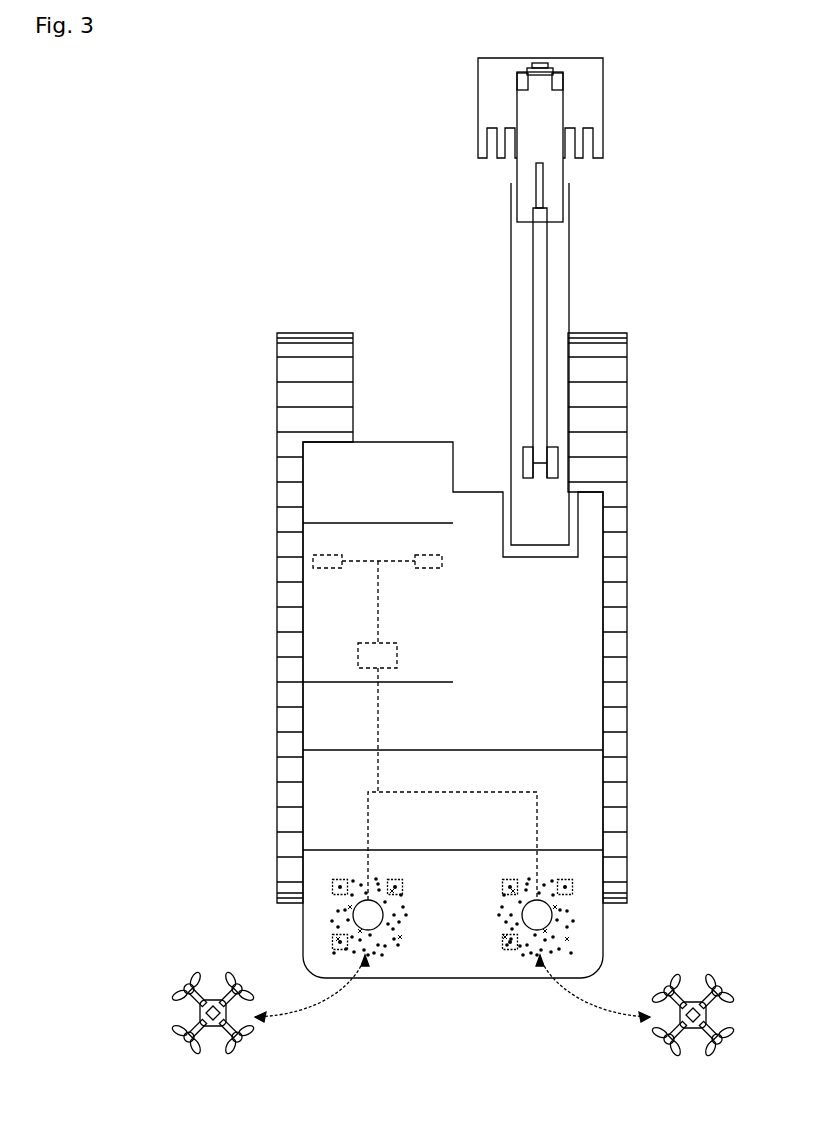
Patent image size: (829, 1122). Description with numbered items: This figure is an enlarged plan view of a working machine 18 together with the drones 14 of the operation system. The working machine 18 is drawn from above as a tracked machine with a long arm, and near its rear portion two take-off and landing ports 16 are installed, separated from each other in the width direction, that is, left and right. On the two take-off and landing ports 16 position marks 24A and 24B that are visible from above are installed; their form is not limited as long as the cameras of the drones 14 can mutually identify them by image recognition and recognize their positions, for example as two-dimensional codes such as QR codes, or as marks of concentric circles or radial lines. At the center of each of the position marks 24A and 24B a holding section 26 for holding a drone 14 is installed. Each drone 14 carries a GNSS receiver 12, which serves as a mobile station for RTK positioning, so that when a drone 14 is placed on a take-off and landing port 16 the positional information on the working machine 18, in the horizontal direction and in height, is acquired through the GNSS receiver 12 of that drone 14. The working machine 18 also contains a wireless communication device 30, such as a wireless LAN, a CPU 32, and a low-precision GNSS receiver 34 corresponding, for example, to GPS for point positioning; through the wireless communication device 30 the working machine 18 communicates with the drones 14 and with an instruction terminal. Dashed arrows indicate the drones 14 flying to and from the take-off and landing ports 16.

The GNSS receiver 12 is at (207, 1013).
The drone 14 is at (457, 959).
The take-off and landing port 16 is at (382, 972).
The working machine 18 is at (434, 216).
The position mark 24A is at (332, 942).
The position mark 24B is at (577, 945).
The holding section 26 is at (366, 916).
The wireless communication device 30 is at (310, 561).
The CPU 32 is at (397, 657).
The low-precision GNSS receiver 34 is at (442, 561).